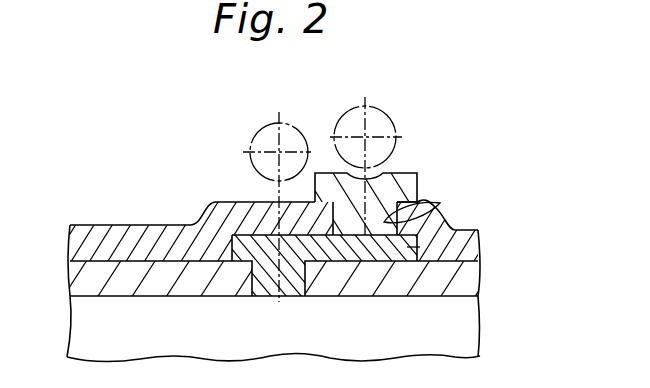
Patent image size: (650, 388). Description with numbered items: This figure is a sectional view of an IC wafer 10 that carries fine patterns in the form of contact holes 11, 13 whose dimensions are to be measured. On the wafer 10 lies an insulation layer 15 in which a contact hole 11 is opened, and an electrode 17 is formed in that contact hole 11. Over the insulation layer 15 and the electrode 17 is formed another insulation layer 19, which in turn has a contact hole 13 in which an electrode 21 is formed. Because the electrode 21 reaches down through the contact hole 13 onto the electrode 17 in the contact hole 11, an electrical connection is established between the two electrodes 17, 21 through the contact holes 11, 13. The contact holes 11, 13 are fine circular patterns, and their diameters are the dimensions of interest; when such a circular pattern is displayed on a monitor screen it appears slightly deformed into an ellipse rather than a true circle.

The IC wafer 10 is at (470, 337).
The contact hole 11 is at (249, 152).
The contact hole 13 is at (395, 130).
The insulation layer 15 is at (468, 280).
The electrode 17 is at (452, 229).
The insulation layer 19 is at (478, 253).
The electrode 21 is at (412, 180).